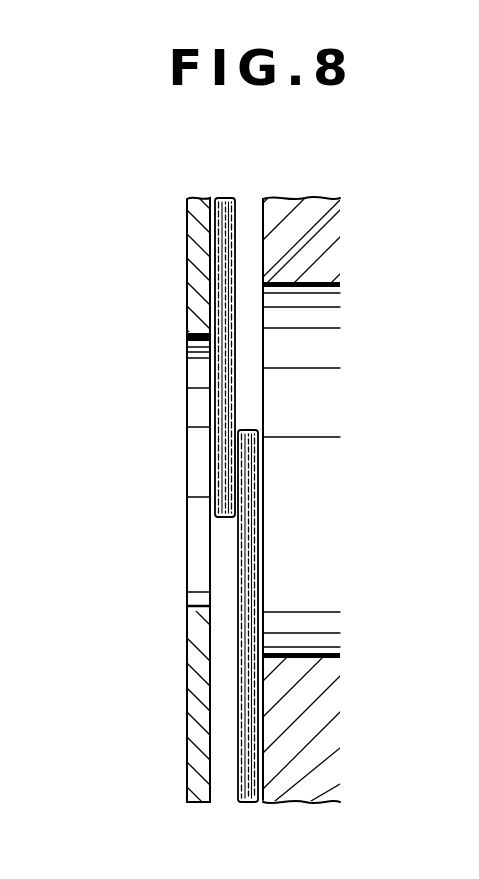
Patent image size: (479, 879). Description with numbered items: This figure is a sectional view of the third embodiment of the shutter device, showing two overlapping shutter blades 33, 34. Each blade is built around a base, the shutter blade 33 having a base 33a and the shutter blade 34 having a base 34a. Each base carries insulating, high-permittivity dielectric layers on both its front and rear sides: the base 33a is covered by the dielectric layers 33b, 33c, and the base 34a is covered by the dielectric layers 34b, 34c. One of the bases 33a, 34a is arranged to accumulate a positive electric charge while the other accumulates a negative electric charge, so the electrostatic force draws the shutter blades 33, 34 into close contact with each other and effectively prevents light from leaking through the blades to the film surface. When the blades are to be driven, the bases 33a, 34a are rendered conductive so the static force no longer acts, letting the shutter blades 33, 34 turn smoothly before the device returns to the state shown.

The shutter blade 33 is at (208, 232).
The base 33a is at (216, 355).
The insulating, high-permittivity dielectric layer 33b is at (219, 418).
The insulating, high-permittivity dielectric layer 33c is at (212, 287).
The shutter blade 34 is at (237, 783).
The base 34a is at (237, 590).
The insulating, high-permittivity dielectric layer 34b is at (237, 668).
The insulating, high-permittivity dielectric layer 34c is at (237, 557).